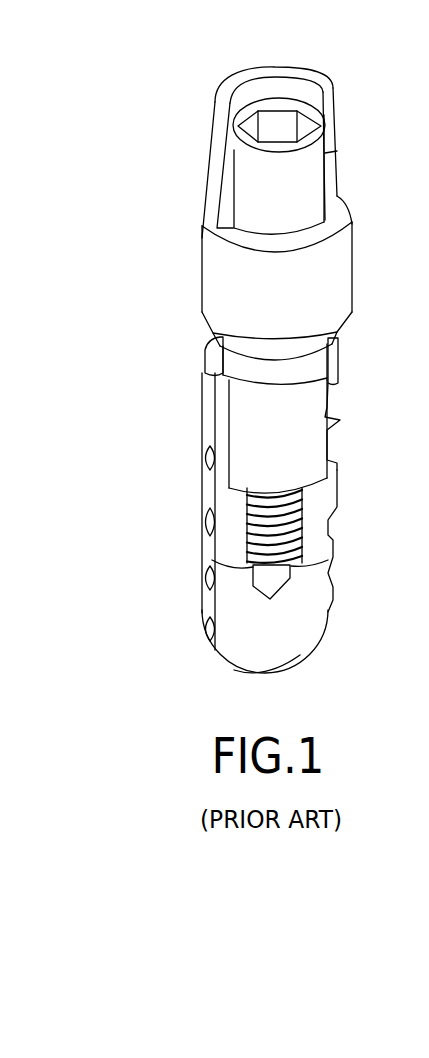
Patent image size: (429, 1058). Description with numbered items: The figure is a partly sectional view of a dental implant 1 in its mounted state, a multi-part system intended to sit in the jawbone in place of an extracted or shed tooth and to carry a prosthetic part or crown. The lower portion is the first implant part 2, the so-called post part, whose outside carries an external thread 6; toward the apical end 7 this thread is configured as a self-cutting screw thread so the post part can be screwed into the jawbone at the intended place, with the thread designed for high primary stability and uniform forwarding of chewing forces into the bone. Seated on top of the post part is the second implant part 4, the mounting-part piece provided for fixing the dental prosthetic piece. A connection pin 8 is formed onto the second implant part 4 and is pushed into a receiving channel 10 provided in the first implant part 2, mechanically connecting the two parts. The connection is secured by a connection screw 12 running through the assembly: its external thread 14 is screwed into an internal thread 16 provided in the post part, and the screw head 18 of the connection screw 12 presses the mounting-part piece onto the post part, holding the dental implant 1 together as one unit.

The dental implant 1 is at (137, 300).
The first implant part 2 is at (338, 602).
The second implant part 4 is at (343, 245).
The external thread 6 is at (342, 505).
The apical end 7 is at (335, 635).
The connection pin 8 is at (342, 422).
The receiving channel 10 is at (233, 498).
The connection screw 12 is at (240, 198).
The external thread 14 is at (303, 541).
The internal thread 16 is at (245, 565).
The screw head 18 is at (313, 172).